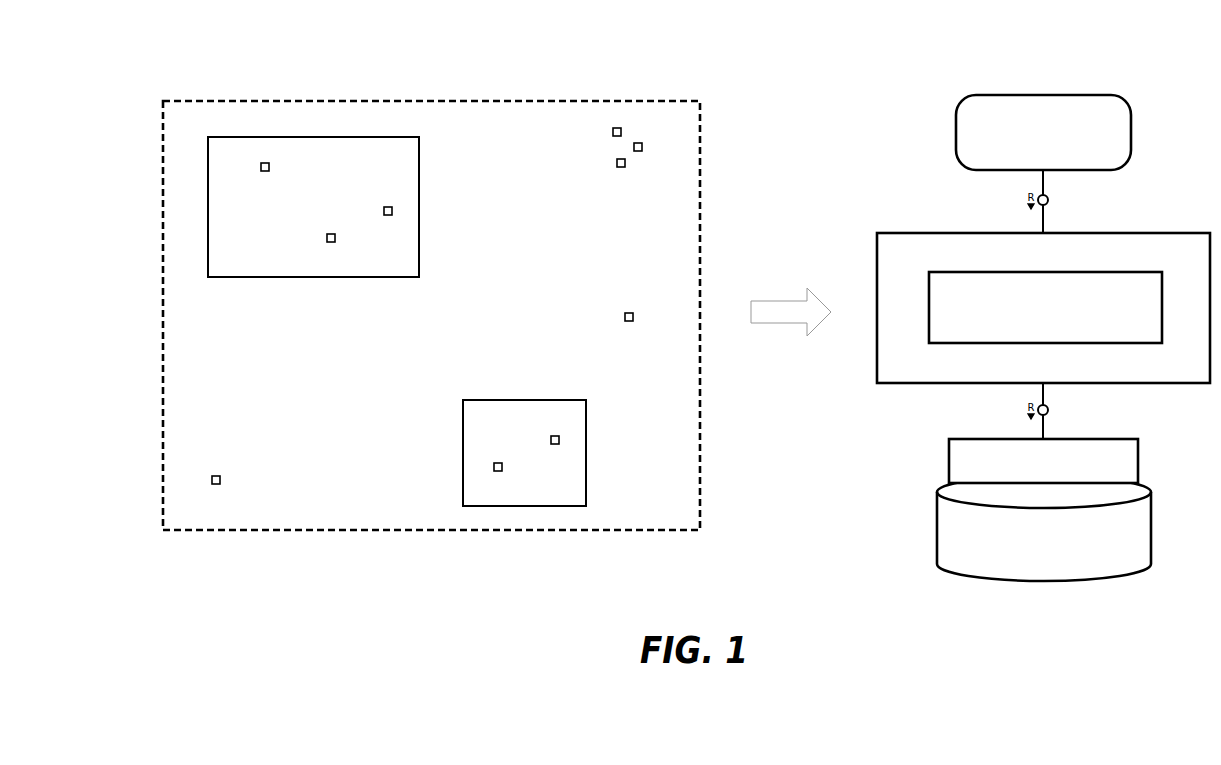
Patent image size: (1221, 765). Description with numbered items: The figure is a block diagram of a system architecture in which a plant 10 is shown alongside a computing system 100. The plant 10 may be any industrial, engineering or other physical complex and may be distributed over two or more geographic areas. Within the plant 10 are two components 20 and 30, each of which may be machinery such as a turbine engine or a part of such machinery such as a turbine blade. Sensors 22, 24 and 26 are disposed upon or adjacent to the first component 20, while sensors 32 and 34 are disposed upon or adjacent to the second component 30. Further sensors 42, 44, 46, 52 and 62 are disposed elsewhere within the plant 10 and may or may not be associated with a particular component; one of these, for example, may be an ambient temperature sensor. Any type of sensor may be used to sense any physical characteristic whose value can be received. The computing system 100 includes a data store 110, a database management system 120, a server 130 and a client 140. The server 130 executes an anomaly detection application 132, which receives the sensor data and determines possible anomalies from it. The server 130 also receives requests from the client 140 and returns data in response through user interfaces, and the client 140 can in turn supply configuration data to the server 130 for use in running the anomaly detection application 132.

The plant 10 is at (657, 516).
The component 20 is at (315, 278).
The sensor 22 is at (269, 171).
The sensor 24 is at (335, 233).
The sensor 26 is at (385, 206).
The component 30 is at (519, 400).
The sensor 32 is at (552, 436).
The sensor 34 is at (502, 463).
The sensor 42 is at (624, 167).
The sensor 44 is at (612, 133).
The sensor 46 is at (641, 151).
The sensor 52 is at (632, 313).
The sensor 62 is at (218, 476).
The computing system 100 is at (919, 48).
The data store 110 is at (1152, 522).
The database management system 120 is at (1140, 468).
The server 130 is at (1136, 233).
The anomaly detection application 132 is at (1130, 272).
The client 140 is at (1086, 96).